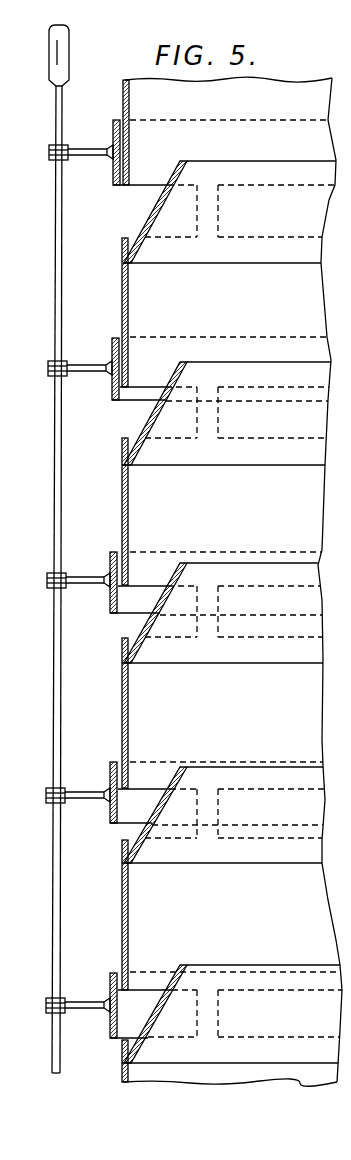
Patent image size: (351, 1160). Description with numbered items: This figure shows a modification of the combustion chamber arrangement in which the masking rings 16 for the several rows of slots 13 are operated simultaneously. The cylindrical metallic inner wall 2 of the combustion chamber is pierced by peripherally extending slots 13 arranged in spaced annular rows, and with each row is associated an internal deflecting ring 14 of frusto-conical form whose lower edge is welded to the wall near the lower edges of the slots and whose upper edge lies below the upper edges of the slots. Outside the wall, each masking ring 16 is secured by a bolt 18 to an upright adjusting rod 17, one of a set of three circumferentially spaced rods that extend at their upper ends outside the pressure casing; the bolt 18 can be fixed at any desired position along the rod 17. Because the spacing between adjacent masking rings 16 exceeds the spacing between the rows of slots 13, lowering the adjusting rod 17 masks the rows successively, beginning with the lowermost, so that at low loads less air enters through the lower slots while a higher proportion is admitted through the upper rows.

The inner wall 2 is at (124, 465).
The slots 13 is at (137, 210).
The internal deflecting ring 14 is at (127, 241).
The masking ring 16 is at (113, 173).
The adjusting rod 17 is at (54, 284).
The bolt 18 is at (97, 149).